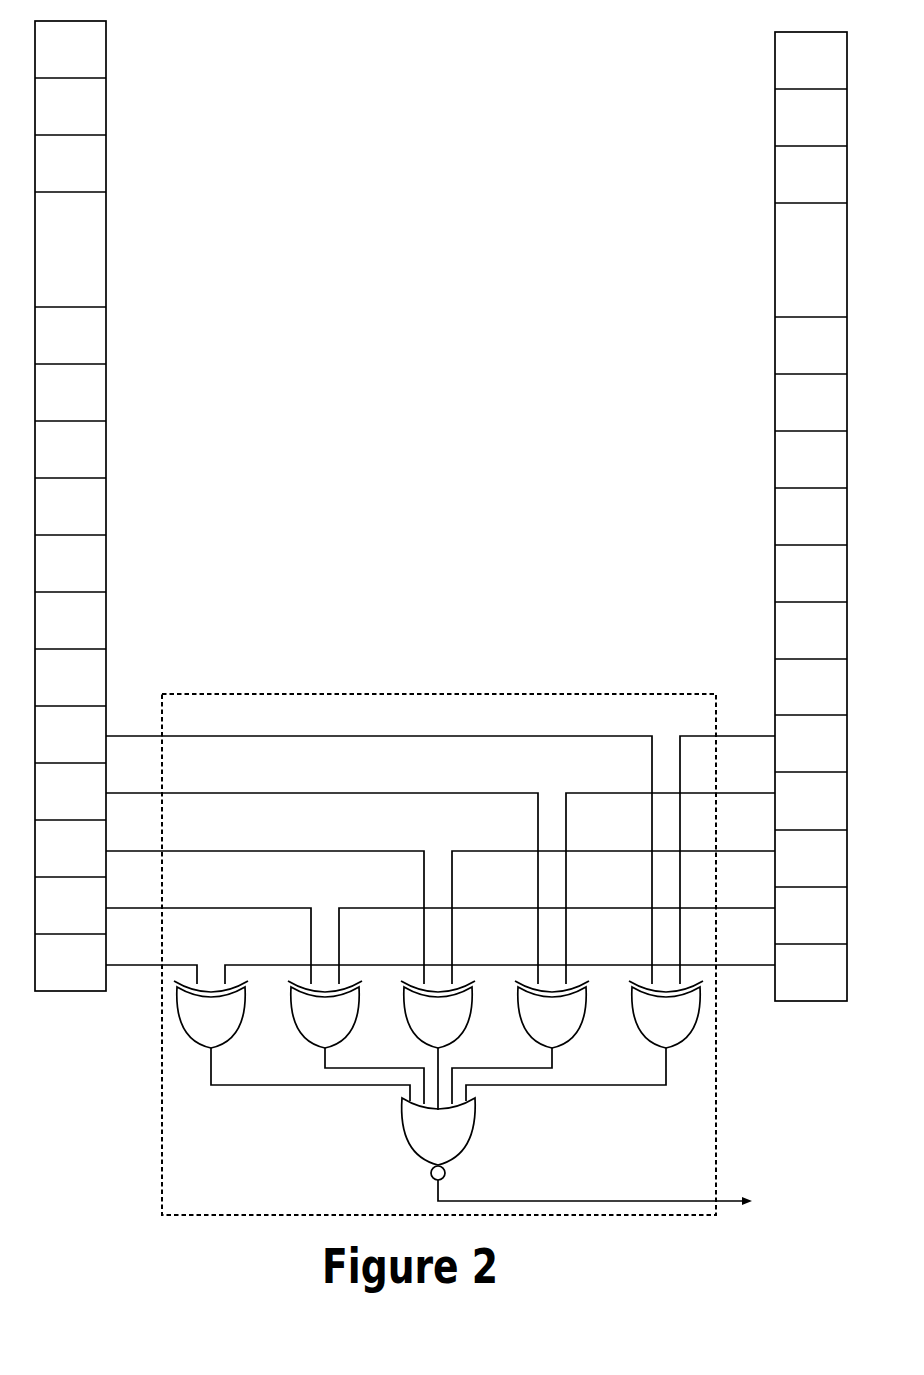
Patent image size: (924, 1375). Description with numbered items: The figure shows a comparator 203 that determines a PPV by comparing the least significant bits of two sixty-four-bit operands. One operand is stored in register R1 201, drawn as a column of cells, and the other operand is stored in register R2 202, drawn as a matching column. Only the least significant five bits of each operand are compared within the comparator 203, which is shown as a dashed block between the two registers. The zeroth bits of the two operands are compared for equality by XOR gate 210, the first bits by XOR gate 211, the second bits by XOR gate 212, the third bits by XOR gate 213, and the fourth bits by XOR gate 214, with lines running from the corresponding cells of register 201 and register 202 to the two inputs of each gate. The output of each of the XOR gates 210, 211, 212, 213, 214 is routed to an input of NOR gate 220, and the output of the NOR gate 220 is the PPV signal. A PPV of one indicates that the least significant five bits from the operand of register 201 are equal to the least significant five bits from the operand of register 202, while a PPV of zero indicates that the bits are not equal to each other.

The register R1 201 is at (187, 506).
The register R2 202 is at (697, 516).
The comparator 203 is at (213, 1158).
The XOR gate 210 is at (211, 1014).
The XOR gate 211 is at (325, 1014).
The XOR gate 212 is at (438, 1014).
The XOR gate 213 is at (552, 1014).
The XOR gate 214 is at (666, 1014).
The NOR gate 220 is at (419, 1143).